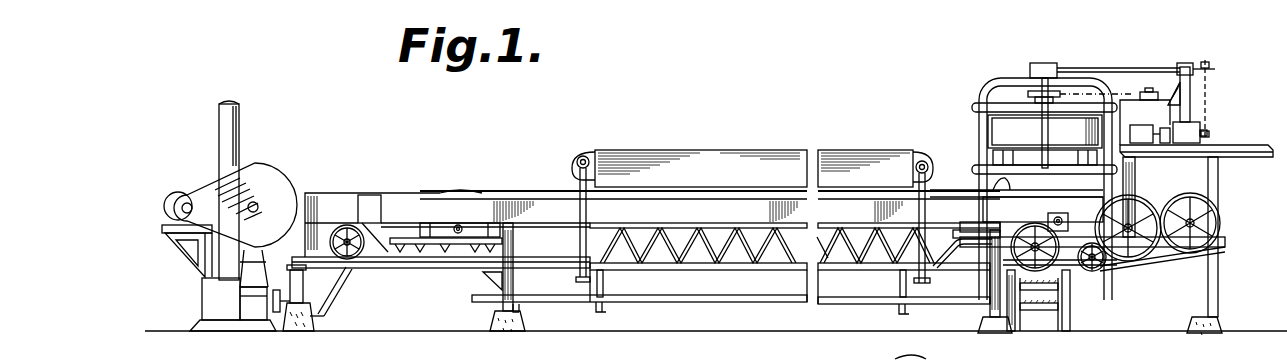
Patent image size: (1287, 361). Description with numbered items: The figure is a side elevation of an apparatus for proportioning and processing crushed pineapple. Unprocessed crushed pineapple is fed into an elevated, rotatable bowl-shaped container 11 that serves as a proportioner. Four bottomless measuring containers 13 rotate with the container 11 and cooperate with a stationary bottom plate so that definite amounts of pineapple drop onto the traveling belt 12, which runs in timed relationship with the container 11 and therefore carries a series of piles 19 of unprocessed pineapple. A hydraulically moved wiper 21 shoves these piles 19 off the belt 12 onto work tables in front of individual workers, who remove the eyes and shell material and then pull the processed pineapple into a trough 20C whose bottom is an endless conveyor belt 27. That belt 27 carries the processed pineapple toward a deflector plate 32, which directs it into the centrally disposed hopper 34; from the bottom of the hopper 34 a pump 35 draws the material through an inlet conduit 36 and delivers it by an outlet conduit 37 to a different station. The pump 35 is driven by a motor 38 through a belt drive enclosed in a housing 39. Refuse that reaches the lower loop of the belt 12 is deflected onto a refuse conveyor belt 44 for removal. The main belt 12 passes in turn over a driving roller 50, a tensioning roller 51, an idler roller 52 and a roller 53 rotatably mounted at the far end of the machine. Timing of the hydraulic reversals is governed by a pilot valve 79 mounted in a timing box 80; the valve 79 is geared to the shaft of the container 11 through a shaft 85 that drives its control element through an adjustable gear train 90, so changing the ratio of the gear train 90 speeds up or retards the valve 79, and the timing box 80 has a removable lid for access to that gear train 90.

The rotatable bowl-shaped container 11 is at (996, 126).
The traveling belt 12 is at (1181, 191).
The measuring container 13 is at (1000, 158).
The piles of unprocessed pineapple 19 is at (1011, 185).
The trough 20C is at (650, 218).
The wiper 21 is at (763, 153).
The endless conveyor belt 27 is at (1005, 222).
The deflector plate 32 is at (373, 203).
The hopper 34 is at (322, 295).
The pump 35 is at (252, 312).
The inlet conduit 36 is at (288, 312).
The outlet conduit 37 is at (231, 133).
The motor 38 is at (177, 200).
The housing 39 is at (268, 181).
The refuse conveyor belt 44 is at (1048, 304).
The driving roller 50 is at (1199, 205).
The tensioning roller 51 is at (1141, 250).
The idler roller 52 is at (1110, 258).
The roller 53 is at (458, 191).
The pilot valve 79 is at (1143, 140).
The timing box 80 is at (1197, 125).
The shaft 85 is at (919, 350).
The adjustable gear train 90 is at (1176, 126).